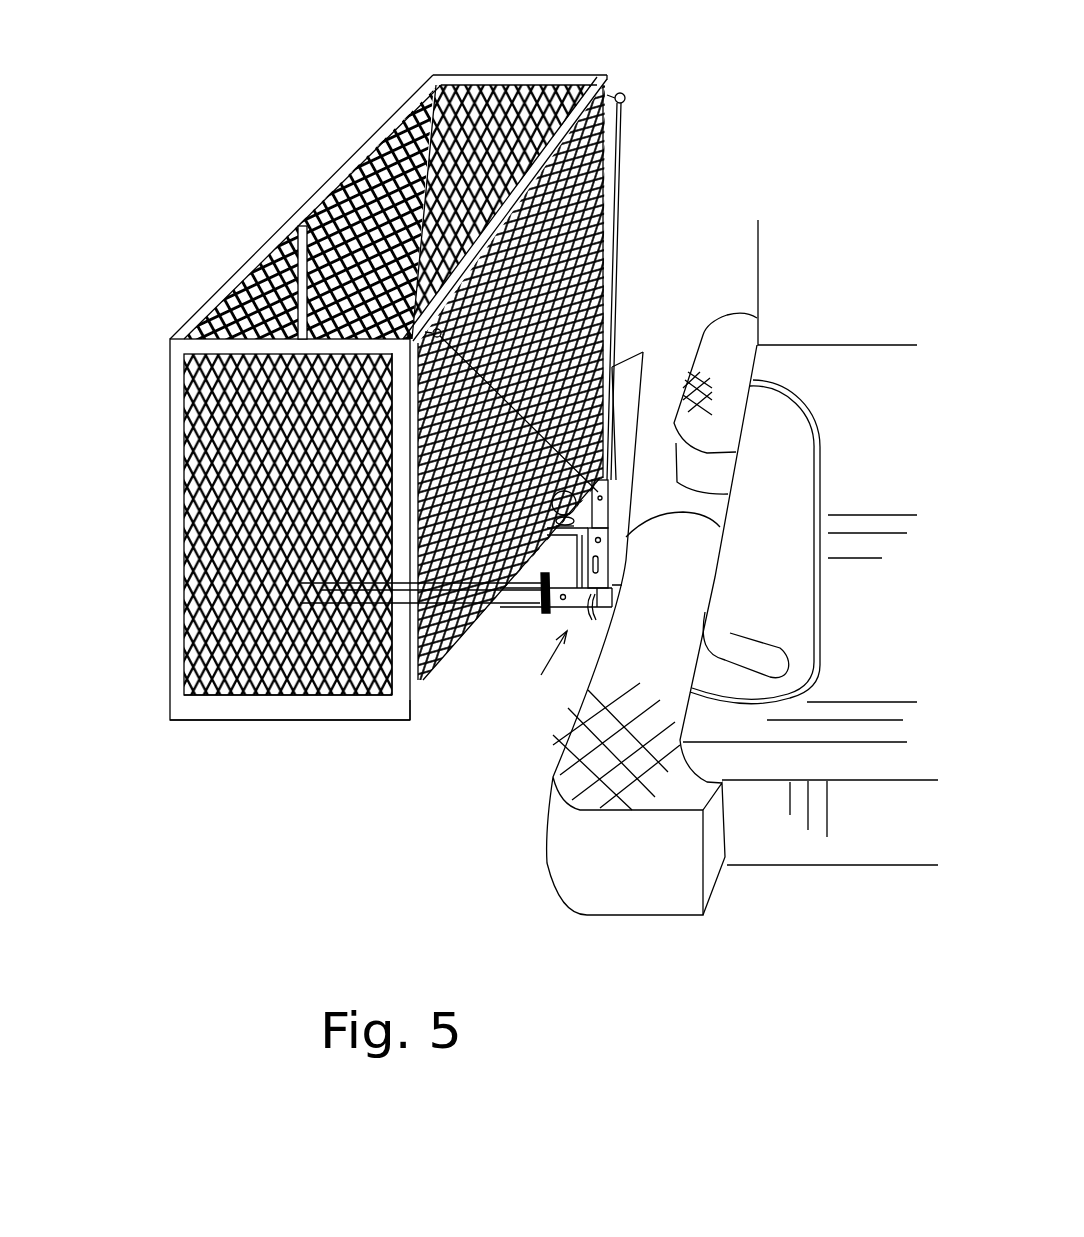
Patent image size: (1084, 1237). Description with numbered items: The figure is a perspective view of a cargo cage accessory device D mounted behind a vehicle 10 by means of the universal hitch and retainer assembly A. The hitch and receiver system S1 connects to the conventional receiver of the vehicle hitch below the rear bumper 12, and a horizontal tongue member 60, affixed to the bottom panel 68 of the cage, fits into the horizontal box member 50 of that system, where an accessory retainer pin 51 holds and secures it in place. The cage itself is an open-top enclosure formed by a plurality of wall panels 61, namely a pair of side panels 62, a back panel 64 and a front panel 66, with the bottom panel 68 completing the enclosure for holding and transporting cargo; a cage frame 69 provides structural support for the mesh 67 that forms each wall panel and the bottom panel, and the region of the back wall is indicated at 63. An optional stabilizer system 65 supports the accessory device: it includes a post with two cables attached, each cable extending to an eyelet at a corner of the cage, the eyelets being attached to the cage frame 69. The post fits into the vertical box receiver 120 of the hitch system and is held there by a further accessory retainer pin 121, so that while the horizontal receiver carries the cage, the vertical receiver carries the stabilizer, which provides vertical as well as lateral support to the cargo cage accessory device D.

The cargo cage accessory device D is at (277, 171).
The universal hitch and retainer assembly A is at (705, 150).
The vehicle 10 is at (797, 878).
The rear bumper 12 is at (572, 826).
The horizontal box member 50 is at (606, 600).
The accessory retainer pin 51 is at (602, 624).
The horizontal tongue member 60 is at (530, 597).
The wall panels 61 is at (247, 228).
The side panels 62 is at (523, 70).
The back wall 63 is at (497, 212).
The back panel 64 is at (396, 109).
The stabilizer system 65 is at (558, 409).
The front panel 66 is at (624, 233).
The mesh 67 is at (226, 404).
The bottom panel 68 is at (294, 726).
The cage frame 69 is at (448, 662).
The vertical box receiver 120 is at (611, 540).
The accessory retainer pin 121 is at (604, 566).
The hitch and receiver system S1 is at (537, 671).